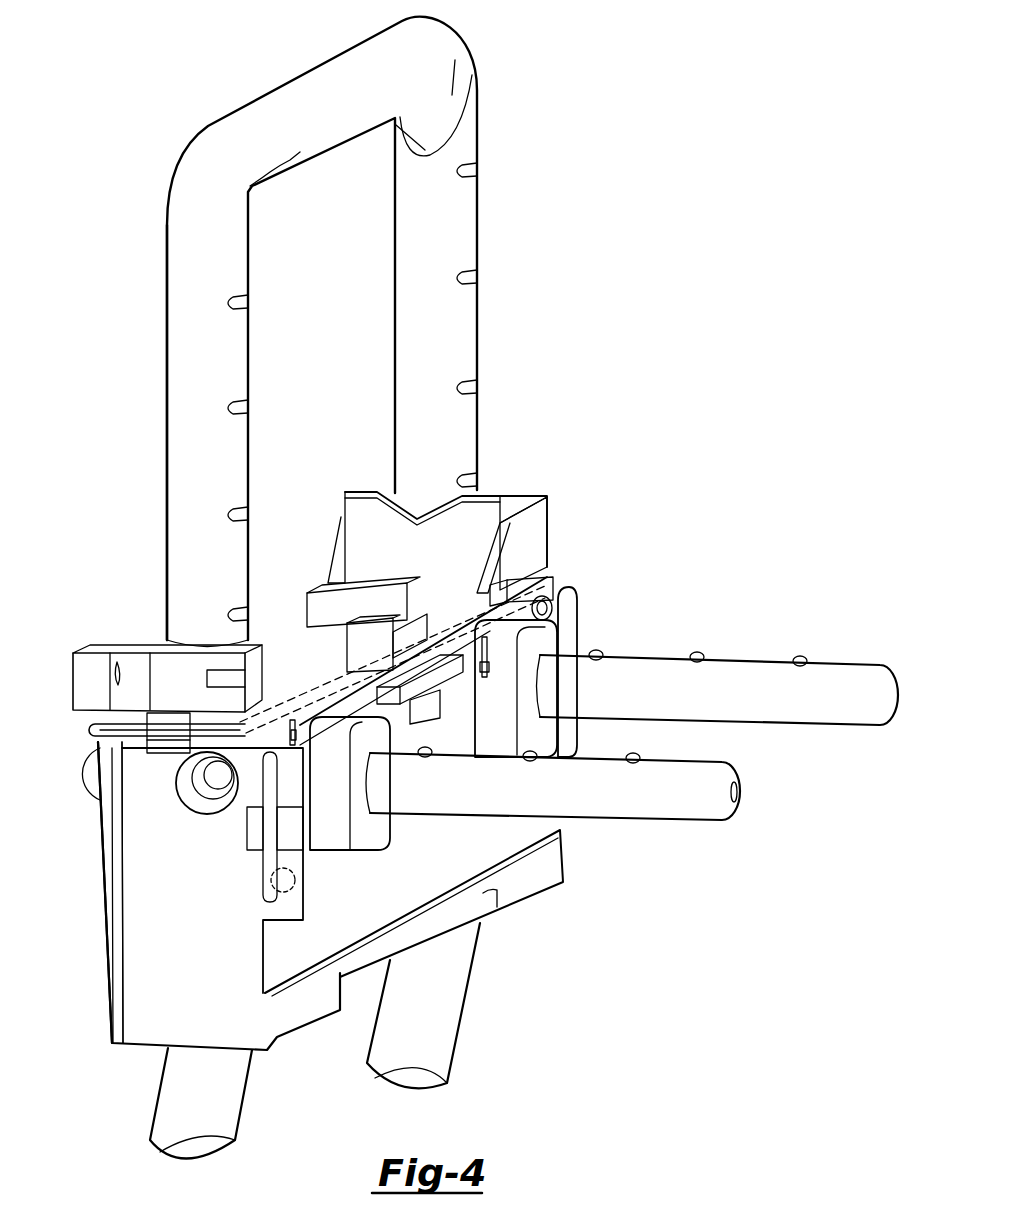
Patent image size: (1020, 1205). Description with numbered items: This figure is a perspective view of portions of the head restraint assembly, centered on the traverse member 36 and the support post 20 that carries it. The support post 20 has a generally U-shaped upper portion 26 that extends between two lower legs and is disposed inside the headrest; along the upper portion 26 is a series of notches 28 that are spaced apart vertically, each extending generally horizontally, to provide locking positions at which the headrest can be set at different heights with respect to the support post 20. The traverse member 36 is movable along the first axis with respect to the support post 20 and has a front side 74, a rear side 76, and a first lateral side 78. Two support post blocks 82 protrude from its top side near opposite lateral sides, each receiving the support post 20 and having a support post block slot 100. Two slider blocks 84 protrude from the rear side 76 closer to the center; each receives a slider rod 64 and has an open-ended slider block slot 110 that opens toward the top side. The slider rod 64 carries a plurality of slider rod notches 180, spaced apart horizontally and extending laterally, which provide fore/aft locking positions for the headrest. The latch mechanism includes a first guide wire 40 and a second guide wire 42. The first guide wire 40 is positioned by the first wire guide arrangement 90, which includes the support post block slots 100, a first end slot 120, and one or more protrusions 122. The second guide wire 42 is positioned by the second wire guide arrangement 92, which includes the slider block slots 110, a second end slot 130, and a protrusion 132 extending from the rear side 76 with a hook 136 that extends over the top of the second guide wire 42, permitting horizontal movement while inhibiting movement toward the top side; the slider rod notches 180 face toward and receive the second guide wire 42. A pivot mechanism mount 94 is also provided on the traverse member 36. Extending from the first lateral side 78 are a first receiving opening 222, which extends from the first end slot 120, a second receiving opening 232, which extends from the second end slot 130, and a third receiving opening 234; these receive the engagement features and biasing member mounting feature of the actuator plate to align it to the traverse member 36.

The support post 20 is at (320, 62).
The upper portion 26 is at (166, 374).
The notches 28 is at (232, 312).
The traverse member 36 is at (112, 948).
The first guide wire 40 is at (100, 728).
The second guide wire 42 is at (473, 660).
The slider rod 64 is at (817, 711).
The front side 74 is at (100, 852).
The rear side 76 is at (520, 853).
The first lateral side 78 is at (140, 905).
The support post block 82 is at (549, 512).
The slider block 84 is at (470, 676).
The first wire guide arrangement 90 is at (501, 491).
The second wire guide arrangement 92 is at (625, 599).
The pivot mechanism mount 94 is at (163, 642).
The support post block slot 100 is at (550, 576).
The slider block slot 110 is at (478, 695).
The first end slot 120 is at (108, 736).
The protrusions 122 is at (386, 618).
The second end slot 130 is at (270, 902).
The protrusion 132 is at (386, 694).
The hook 136 is at (428, 705).
The slider rod notches 180 is at (432, 762).
The first receiving opening 222 is at (173, 652).
The second receiving opening 232 is at (252, 836).
The third receiving opening 234 is at (182, 806).